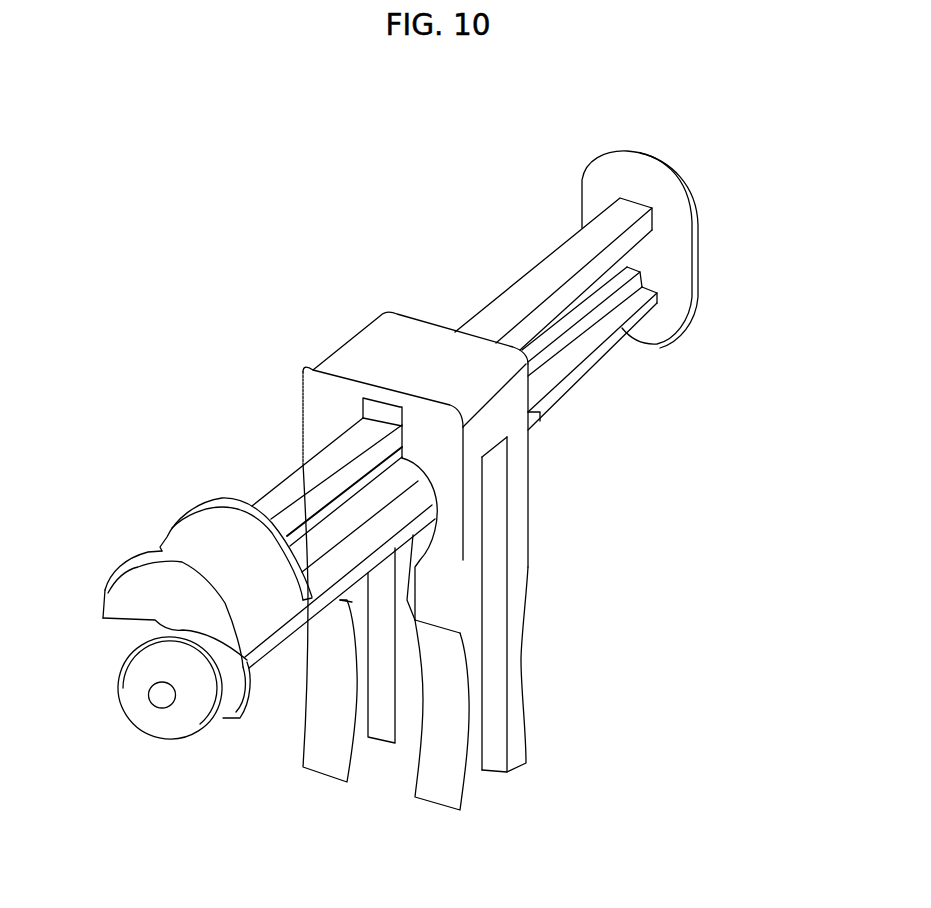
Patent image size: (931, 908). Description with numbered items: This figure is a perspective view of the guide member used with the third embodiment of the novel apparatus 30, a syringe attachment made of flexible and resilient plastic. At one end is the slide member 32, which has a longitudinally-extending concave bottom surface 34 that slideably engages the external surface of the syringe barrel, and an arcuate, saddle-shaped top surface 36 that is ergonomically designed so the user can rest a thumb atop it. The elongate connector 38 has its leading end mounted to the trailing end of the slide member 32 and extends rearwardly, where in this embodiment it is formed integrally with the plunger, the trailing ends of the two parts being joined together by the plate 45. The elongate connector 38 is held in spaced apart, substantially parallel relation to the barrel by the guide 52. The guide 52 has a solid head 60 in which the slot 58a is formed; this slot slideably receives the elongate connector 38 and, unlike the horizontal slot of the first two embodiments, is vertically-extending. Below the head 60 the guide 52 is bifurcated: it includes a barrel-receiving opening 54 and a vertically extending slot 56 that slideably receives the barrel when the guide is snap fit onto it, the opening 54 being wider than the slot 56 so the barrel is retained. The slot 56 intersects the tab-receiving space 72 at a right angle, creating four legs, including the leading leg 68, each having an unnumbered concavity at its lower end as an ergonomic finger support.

The novel apparatus 30 is at (277, 177).
The slide member 32 is at (126, 549).
The concave bottom surface 34 is at (113, 623).
The saddle-shaped top surface 36 is at (273, 605).
The elongate connector 38 is at (514, 268).
The plate 45 is at (700, 257).
The guide 52 is at (540, 552).
The barrel-receiving opening 54 is at (437, 493).
The vertically extending slot 56 is at (414, 722).
The vertically-extending slot 58a is at (372, 414).
The solid head 60 is at (363, 353).
The leading leg 68 is at (473, 782).
The tab-receiving space 72 is at (495, 601).